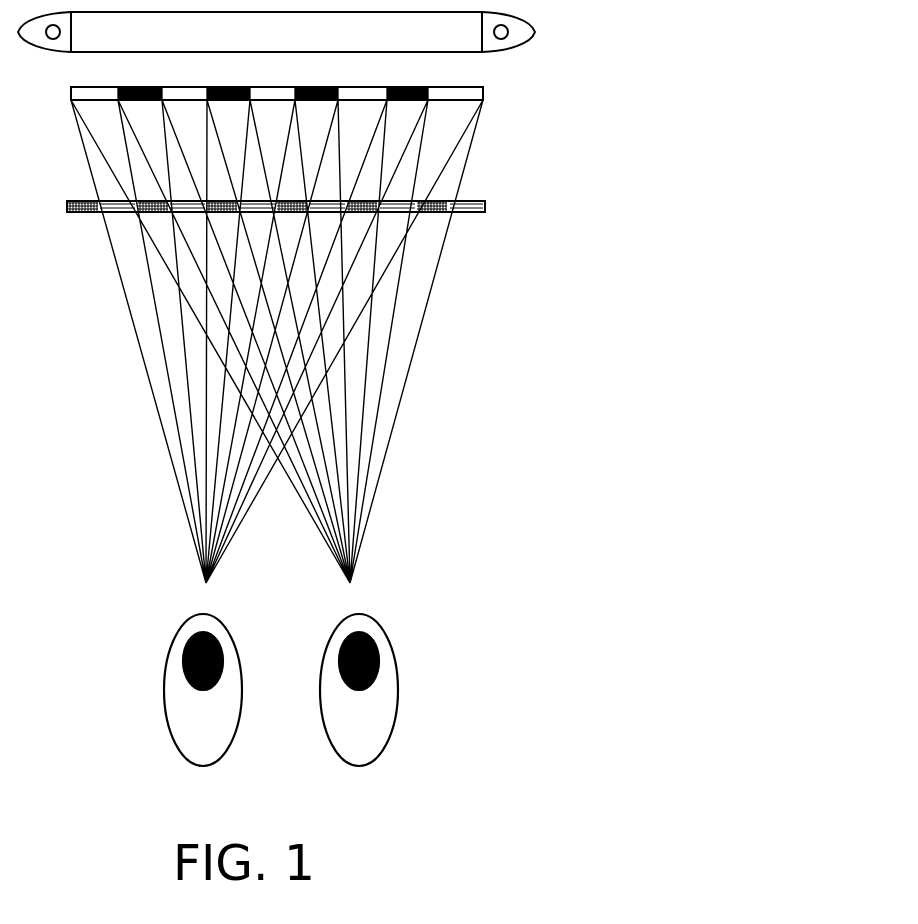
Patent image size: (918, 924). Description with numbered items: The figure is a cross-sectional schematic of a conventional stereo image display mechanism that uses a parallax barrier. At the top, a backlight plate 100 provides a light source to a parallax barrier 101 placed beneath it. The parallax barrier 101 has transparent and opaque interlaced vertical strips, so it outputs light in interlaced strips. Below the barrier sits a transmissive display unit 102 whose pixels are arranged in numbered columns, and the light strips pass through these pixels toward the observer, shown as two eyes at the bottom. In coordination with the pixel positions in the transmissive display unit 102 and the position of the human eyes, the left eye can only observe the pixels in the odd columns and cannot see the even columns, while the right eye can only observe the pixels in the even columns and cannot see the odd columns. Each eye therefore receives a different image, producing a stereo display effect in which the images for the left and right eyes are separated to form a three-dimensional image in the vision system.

The backlight plate 100 is at (535, 33).
The parallax barrier 101 is at (483, 96).
The transmissive display unit 102 is at (485, 205).